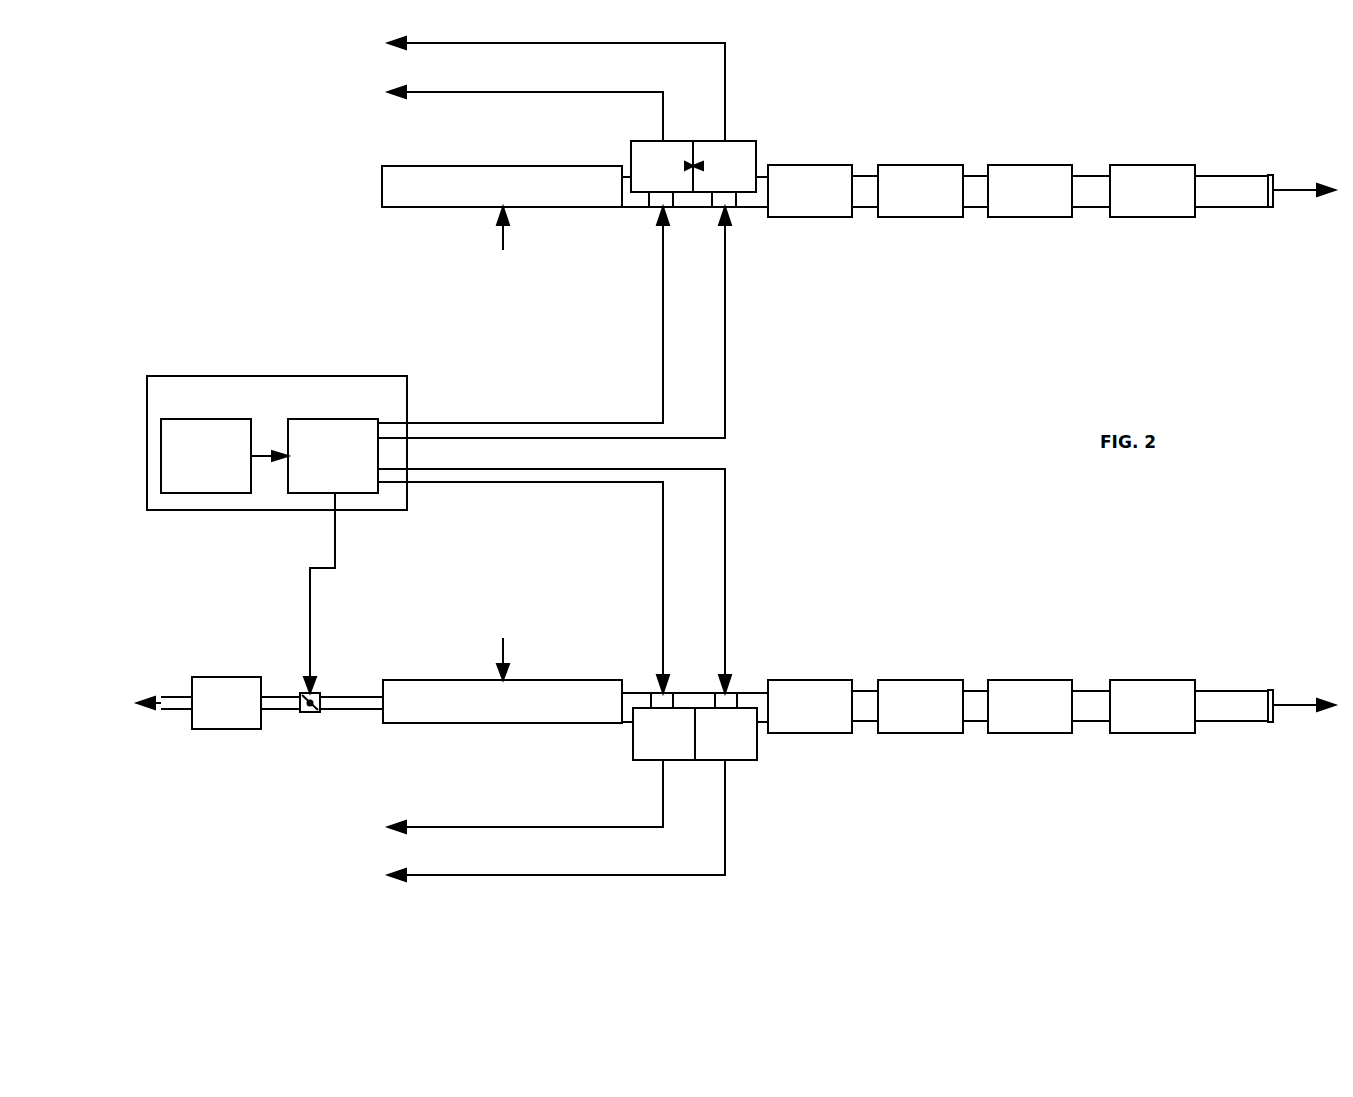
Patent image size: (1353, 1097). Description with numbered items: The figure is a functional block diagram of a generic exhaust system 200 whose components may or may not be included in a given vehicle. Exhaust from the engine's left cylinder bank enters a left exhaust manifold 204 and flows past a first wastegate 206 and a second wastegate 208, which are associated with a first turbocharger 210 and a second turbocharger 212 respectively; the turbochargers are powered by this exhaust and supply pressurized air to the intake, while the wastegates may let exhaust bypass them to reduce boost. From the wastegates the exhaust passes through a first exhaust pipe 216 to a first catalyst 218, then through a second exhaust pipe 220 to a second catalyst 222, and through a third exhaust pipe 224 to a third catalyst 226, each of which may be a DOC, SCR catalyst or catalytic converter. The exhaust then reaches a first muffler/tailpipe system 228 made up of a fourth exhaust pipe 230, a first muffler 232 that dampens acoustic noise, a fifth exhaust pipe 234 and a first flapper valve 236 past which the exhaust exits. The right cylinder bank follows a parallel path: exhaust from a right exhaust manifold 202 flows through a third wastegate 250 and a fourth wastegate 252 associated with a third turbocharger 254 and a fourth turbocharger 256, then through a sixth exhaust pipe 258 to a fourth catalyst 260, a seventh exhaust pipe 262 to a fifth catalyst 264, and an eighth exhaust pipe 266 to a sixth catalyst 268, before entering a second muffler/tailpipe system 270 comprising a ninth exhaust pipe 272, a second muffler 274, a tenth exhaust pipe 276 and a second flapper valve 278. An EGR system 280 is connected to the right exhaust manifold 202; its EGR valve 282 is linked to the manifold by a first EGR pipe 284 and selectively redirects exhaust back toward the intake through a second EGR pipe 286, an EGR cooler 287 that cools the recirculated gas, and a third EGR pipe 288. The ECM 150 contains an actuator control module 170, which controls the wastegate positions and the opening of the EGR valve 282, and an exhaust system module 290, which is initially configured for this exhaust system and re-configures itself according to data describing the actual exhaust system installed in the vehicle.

The exhaust system 200 is at (1245, 74).
The ECM 150 is at (276, 376).
The actuator control module 170 is at (362, 493).
The exhaust system module 290 is at (207, 493).
The right exhaust manifold 202 is at (505, 723).
The left exhaust manifold 204 is at (503, 166).
The first wastegate 206 is at (652, 207).
The second wastegate 208 is at (714, 207).
The first turbocharger 210 is at (643, 141).
The second turbocharger 212 is at (744, 141).
The first exhaust pipe 216 is at (747, 207).
The first catalyst 218 is at (810, 218).
The second exhaust pipe 220 is at (866, 207).
The second catalyst 222 is at (922, 218).
The third exhaust pipe 224 is at (975, 207).
The third catalyst 226 is at (1030, 218).
The first muffler/tailpipe system 228 is at (1194, 284).
The fourth exhaust pipe 230 is at (1080, 207).
The first muffler 232 is at (1155, 218).
The fifth exhaust pipe 234 is at (1210, 207).
The first flapper valve 236 is at (1272, 207).
The third wastegate 250 is at (648, 693).
The fourth wastegate 252 is at (712, 693).
The third turbocharger 254 is at (648, 760).
The fourth turbocharger 256 is at (751, 760).
The sixth exhaust pipe 258 is at (752, 693).
The fourth catalyst 260 is at (810, 733).
The seventh exhaust pipe 262 is at (866, 721).
The fifth catalyst 264 is at (922, 733).
The eighth exhaust pipe 266 is at (975, 721).
The sixth catalyst 268 is at (1030, 733).
The second muffler/tailpipe system 270 is at (1196, 649).
The ninth exhaust pipe 272 is at (1080, 721).
The second muffler 274 is at (1155, 733).
The tenth exhaust pipe 276 is at (1210, 721).
The second flapper valve 278 is at (1272, 721).
The EGR system 280 is at (365, 773).
The EGR valve 282 is at (312, 712).
The first EGR pipe 284 is at (352, 709).
The second EGR pipe 286 is at (288, 709).
The EGR cooler 287 is at (225, 729).
The third EGR pipe 288 is at (177, 709).